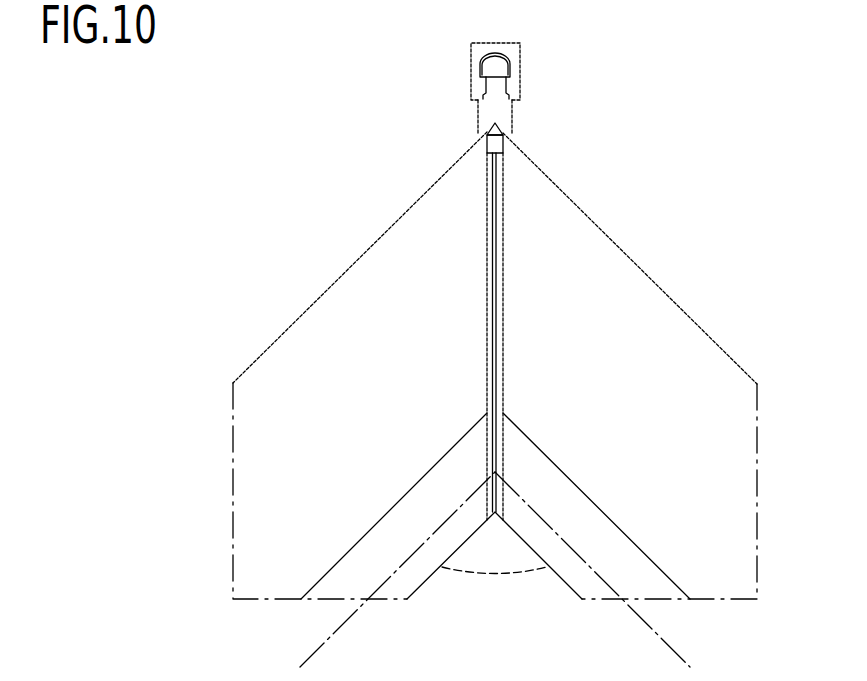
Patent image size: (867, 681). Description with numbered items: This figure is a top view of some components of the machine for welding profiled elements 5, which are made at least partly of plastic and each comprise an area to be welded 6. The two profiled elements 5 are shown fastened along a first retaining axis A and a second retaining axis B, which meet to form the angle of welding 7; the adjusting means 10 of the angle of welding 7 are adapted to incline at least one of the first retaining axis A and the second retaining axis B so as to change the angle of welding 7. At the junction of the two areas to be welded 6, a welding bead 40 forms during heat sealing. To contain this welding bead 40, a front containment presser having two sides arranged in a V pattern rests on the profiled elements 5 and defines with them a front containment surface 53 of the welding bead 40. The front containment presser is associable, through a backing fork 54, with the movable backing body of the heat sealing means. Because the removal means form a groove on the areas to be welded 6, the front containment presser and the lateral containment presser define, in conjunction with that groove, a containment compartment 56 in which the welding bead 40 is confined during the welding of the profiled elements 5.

The profiled elements 5 is at (336, 395).
The area to be welded 6 is at (497, 289).
The angle of welding 7 is at (473, 575).
The adjusting means 10 is at (480, 676).
The welding bead 40 is at (495, 208).
The front containment surface 53 is at (484, 135).
The backing fork 54 is at (512, 45).
The containment compartment 56 is at (500, 138).
The first retaining axis A is at (653, 628).
The second retaining axis B is at (335, 628).